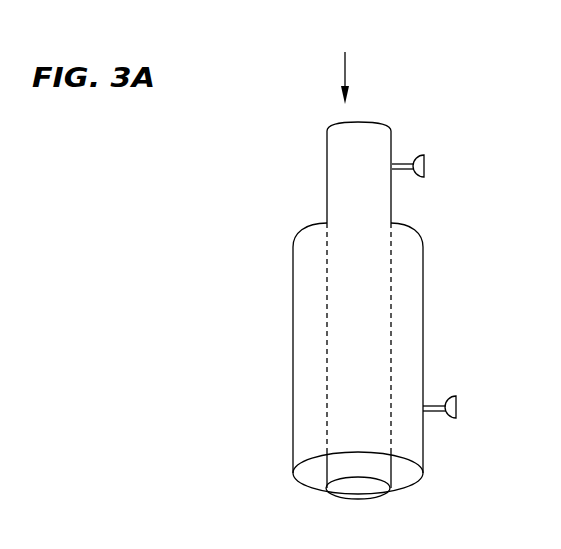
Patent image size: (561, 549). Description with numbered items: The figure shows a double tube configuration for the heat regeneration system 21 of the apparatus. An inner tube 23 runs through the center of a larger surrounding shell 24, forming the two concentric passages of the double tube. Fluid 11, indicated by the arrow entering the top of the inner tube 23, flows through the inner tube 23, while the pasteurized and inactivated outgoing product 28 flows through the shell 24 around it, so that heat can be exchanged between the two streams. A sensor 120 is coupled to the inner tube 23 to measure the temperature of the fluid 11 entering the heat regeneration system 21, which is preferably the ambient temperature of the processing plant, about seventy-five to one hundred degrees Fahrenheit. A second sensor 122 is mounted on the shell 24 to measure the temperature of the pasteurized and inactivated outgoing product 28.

The fluid 11 is at (346, 60).
The heat regeneration system 21 is at (368, 285).
The inner tube 23 is at (391, 128).
The shell 24 is at (293, 428).
The pasteurized and inactivated outgoing product 28 is at (306, 221).
The sensor 120 is at (424, 166).
The sensor 122 is at (456, 407).